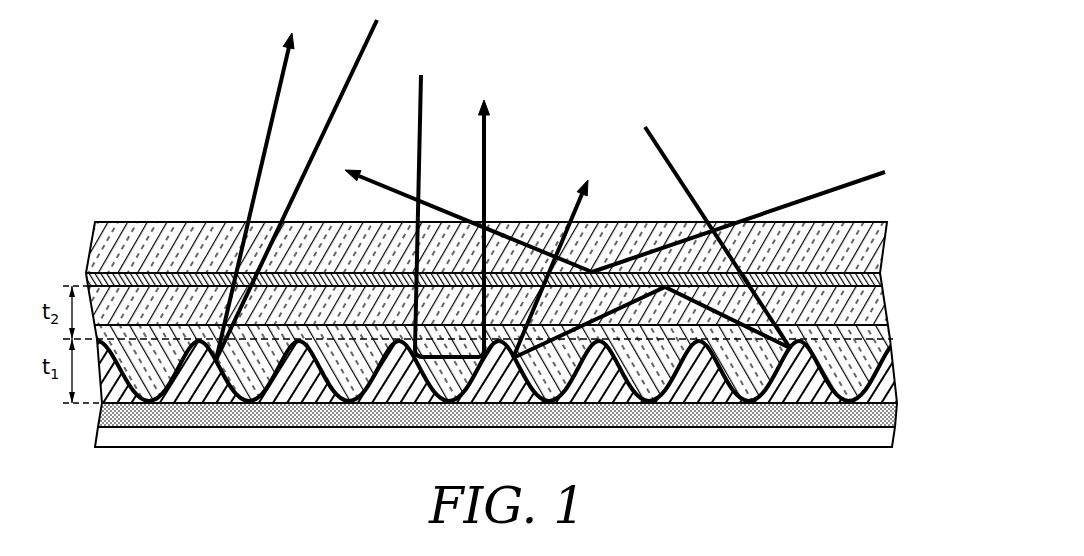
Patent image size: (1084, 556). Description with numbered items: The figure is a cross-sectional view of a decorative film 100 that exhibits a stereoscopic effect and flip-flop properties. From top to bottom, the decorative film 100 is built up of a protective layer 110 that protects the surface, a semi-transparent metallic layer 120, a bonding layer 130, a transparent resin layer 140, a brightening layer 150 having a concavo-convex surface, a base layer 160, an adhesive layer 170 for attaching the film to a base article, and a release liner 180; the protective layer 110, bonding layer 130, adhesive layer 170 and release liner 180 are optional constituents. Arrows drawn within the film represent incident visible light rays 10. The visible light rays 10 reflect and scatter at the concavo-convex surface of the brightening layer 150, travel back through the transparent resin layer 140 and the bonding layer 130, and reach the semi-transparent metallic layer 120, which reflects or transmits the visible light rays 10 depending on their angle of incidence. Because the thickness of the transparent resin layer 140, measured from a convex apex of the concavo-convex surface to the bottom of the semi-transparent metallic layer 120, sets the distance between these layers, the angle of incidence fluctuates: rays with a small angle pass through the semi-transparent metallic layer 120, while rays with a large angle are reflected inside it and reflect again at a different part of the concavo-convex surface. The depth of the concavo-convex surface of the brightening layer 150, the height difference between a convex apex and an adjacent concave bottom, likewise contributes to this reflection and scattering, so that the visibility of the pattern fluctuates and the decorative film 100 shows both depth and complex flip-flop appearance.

The visible light rays 10 is at (843, 182).
The decorative film 100 is at (905, 195).
The protective layer 110 is at (882, 245).
The semi-transparent metallic layer 120 is at (885, 279).
The bonding layer 130 is at (870, 304).
The transparent resin layer 140 is at (885, 338).
The brightening layer 150 is at (885, 360).
The base layer 160 is at (888, 393).
The adhesive layer 170 is at (888, 410).
The release liner 180 is at (887, 435).